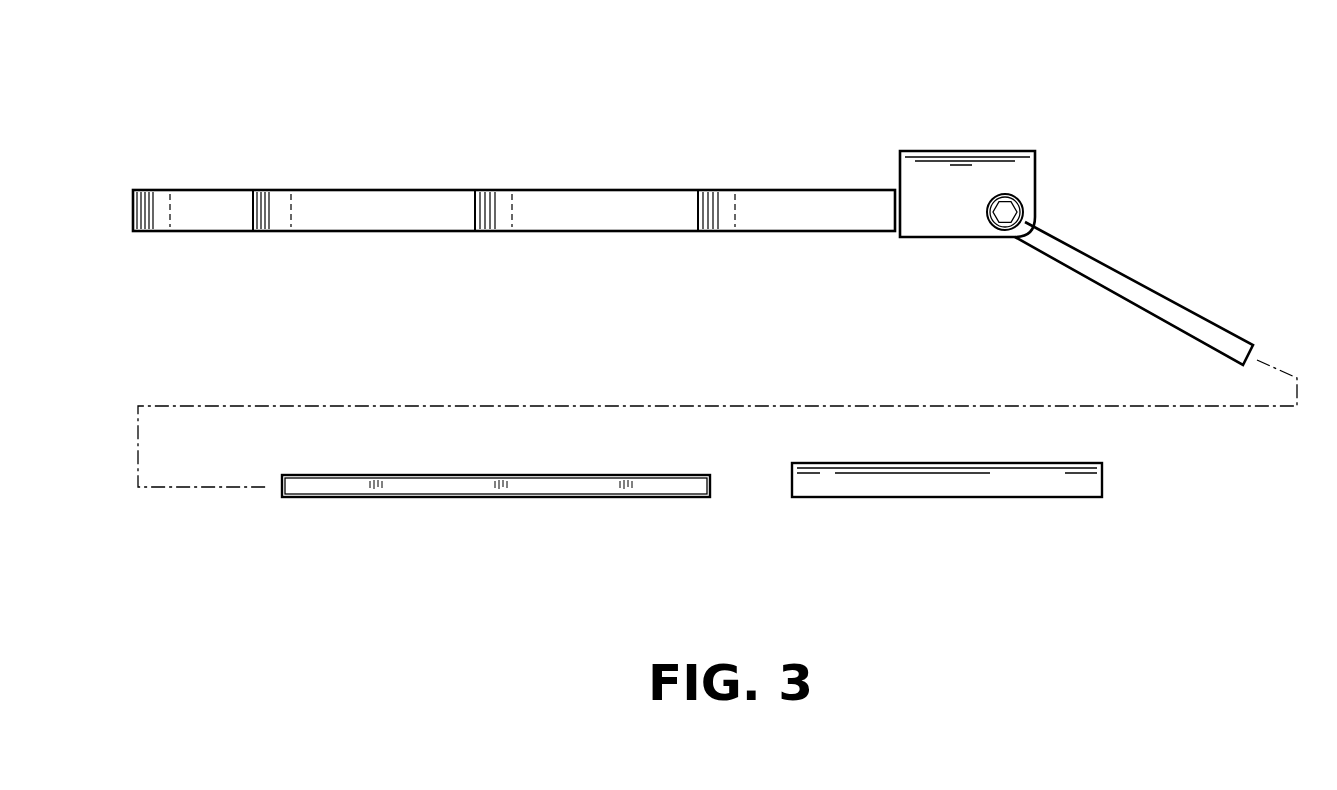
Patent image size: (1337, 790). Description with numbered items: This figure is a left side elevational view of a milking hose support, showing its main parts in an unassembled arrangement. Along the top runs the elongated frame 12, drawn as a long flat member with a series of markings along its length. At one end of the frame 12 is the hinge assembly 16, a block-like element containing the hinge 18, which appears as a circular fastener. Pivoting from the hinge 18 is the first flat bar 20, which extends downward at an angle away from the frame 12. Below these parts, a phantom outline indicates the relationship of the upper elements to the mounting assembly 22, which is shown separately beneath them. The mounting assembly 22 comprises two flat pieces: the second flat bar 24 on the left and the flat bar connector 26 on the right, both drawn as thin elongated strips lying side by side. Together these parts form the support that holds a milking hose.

The frame 12 is at (885, 108).
The hinge assembly 16 is at (1038, 133).
The hinge 18 is at (1003, 213).
The first flat bar 20 is at (1148, 300).
The mounting assembly 22 is at (694, 551).
The second flat bar 24 is at (448, 485).
The flat bar connector 26 is at (947, 525).